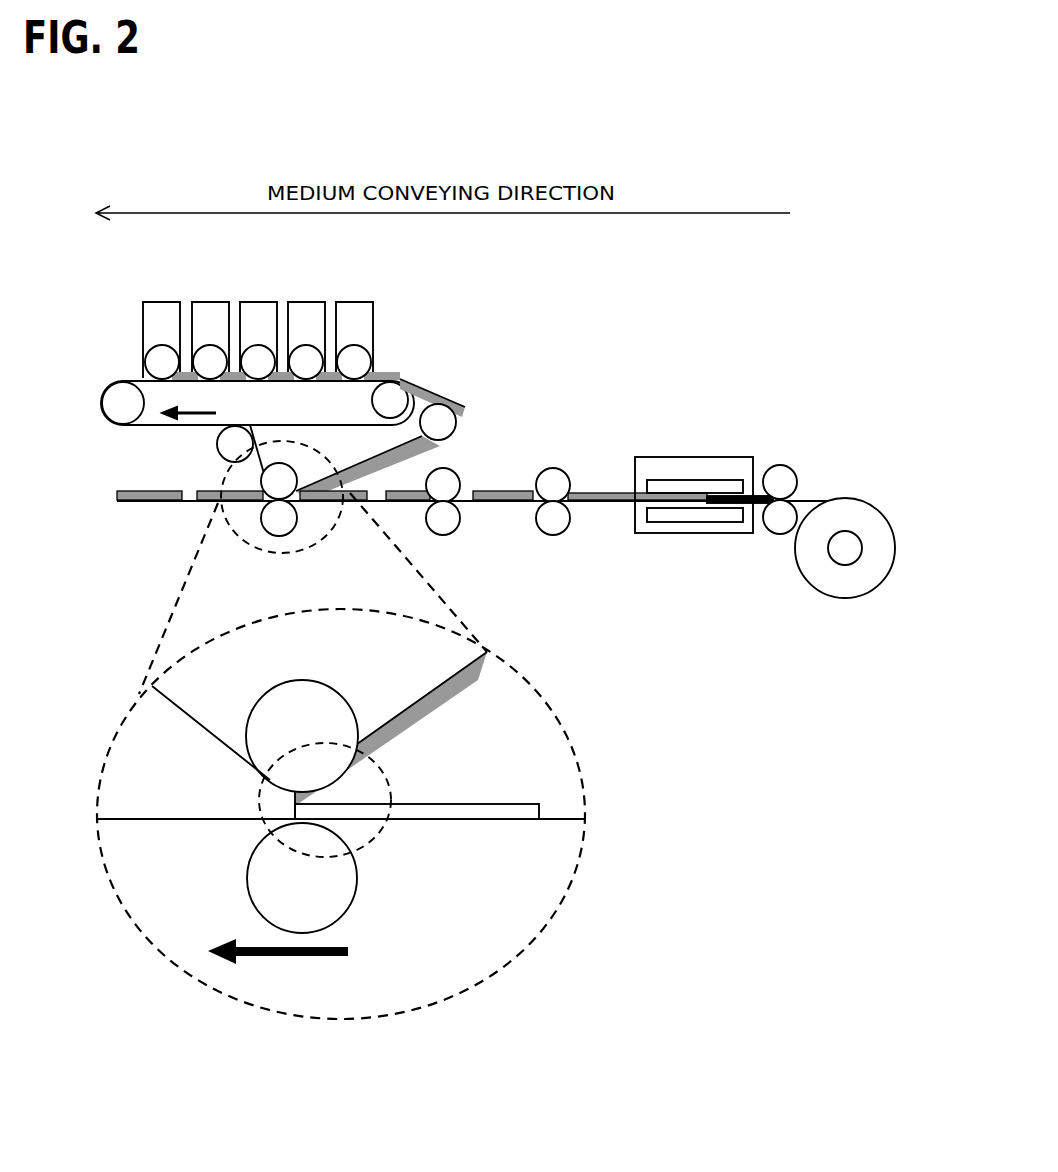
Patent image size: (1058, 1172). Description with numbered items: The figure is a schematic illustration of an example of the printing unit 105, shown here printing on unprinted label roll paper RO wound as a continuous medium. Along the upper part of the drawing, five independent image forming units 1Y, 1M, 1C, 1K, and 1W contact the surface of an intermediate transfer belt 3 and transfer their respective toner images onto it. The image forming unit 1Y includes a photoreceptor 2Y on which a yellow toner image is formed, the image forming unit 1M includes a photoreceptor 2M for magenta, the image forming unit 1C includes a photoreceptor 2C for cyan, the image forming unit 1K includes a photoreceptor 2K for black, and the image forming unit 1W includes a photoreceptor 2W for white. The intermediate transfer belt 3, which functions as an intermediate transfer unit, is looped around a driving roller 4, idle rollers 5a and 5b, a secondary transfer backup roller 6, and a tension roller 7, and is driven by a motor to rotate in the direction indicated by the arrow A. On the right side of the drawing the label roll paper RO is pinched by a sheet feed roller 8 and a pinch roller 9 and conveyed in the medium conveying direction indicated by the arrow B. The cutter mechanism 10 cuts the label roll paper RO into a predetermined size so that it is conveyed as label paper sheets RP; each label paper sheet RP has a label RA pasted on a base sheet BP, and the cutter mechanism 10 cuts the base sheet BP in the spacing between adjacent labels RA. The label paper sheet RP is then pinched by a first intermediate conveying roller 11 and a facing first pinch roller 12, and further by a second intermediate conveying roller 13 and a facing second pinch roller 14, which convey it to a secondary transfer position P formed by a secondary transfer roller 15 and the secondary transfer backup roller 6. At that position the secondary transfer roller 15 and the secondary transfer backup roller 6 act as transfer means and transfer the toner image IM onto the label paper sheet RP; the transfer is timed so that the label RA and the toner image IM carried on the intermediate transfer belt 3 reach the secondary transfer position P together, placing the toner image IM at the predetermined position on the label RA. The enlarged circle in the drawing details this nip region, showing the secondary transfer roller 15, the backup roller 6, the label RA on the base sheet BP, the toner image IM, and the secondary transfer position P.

The printing unit 105 is at (798, 296).
The image forming unit 1Y is at (160, 302).
The image forming unit 1M is at (209, 302).
The image forming unit 1C is at (257, 302).
The image forming unit 1K is at (305, 302).
The image forming unit 1W is at (353, 302).
The photoreceptor 2Y is at (155, 362).
The photoreceptor 2M is at (213, 370).
The photoreceptor 2C is at (260, 370).
The photoreceptor 2K is at (307, 370).
The photoreceptor 2W is at (366, 360).
The intermediate transfer belt 3 is at (152, 426).
The driving roller 4 is at (117, 405).
The idle roller 5a is at (396, 398).
The idle roller 5b is at (440, 423).
The secondary transfer backup roller 6 is at (270, 482).
The tension roller 7 is at (228, 442).
The sheet feed roller 8 is at (780, 521).
The pinch roller 9 is at (783, 480).
The cutter mechanism 10 is at (700, 457).
The first intermediate conveying roller 11 is at (557, 522).
The first pinch roller 12 is at (556, 482).
The second intermediate conveying roller 13 is at (448, 522).
The second pinch roller 14 is at (448, 484).
The secondary transfer roller 15 is at (279, 522).
The label roll paper RO is at (860, 512).
The label paper sheet RP is at (681, 350).
The label RA is at (588, 500).
The base sheet BP is at (624, 500).
The toner image IM is at (462, 703).
The secondary transfer position P is at (386, 830).
The arrow A is at (189, 405).
The arrow B is at (432, 214).